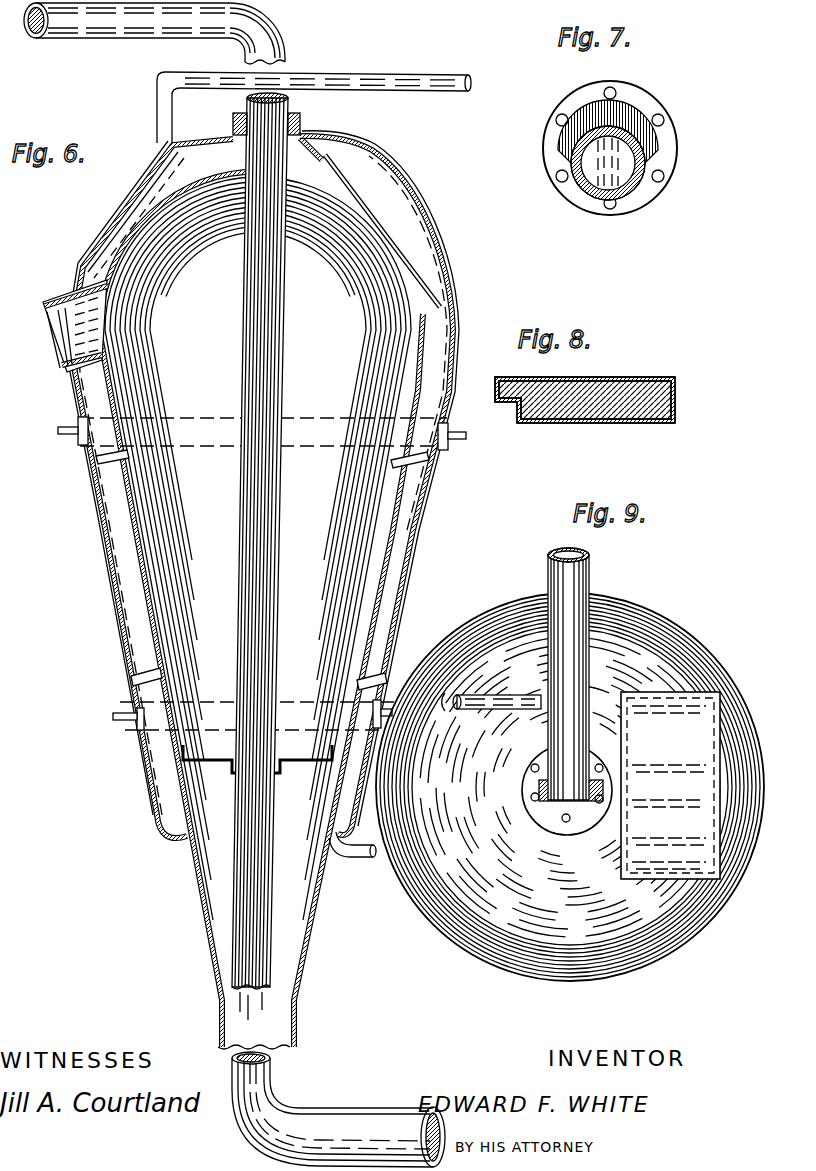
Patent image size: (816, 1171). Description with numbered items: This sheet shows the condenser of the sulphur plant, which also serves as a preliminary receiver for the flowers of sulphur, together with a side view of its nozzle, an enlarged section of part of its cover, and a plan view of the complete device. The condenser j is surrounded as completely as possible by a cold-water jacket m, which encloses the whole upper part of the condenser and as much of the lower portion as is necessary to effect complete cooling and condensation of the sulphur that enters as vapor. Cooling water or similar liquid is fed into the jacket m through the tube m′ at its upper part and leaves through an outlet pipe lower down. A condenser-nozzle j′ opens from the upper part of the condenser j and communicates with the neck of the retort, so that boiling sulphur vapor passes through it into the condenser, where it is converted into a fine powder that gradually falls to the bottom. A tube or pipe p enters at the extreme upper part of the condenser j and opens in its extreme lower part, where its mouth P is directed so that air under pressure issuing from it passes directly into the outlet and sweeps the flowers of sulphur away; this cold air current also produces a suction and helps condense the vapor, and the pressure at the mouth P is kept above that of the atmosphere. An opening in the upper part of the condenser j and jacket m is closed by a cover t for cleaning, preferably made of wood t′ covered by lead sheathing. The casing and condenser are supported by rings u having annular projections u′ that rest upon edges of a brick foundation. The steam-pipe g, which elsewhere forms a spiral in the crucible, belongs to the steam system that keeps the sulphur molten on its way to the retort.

In FIG. 6, the tube or pipe p is at (164, 496).
In FIG. 9, the tube or pipe p is at (592, 668).
In FIG. 6, the tube m′ is at (314, 107).
In FIG. 9, the tube m′ is at (491, 722).
In FIG. 6, the condenser-nozzle j′ is at (52, 300).
In FIG. 7, the condenser-nozzle j′ is at (578, 150).
In FIG. 6, the cover t is at (377, 237).
In FIG. 8, the cover t is at (585, 413).
In FIG. 9, the cover t is at (670, 785).
In FIG. 6, the condenser j is at (261, 609).
In FIG. 6, the rings u is at (122, 692).
In FIG. 6, the annular projections u′ is at (108, 733).
In FIG. 6, the cold-water jacket m is at (120, 612).
In FIG. 9, the cold-water jacket m is at (570, 787).
In FIG. 6, the mouth P is at (254, 1020).
In FIG. 6, the exit steam-pipe g is at (338, 1109).
In FIG. 8, the wood t′ is at (671, 394).